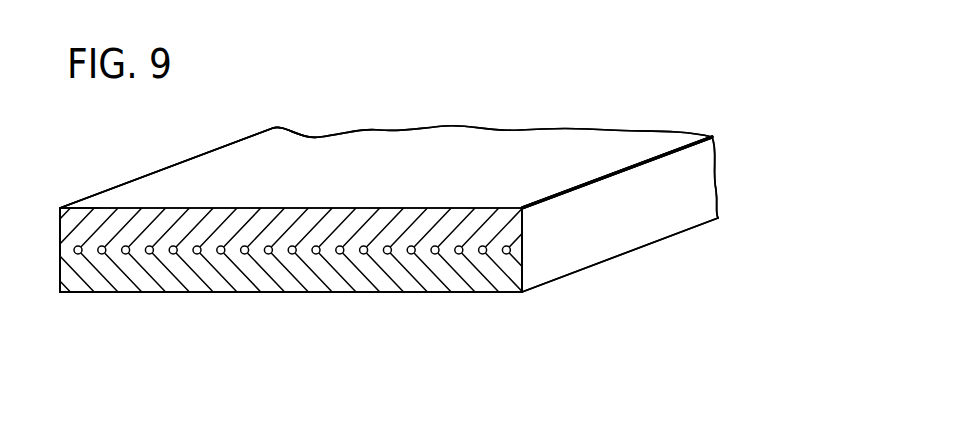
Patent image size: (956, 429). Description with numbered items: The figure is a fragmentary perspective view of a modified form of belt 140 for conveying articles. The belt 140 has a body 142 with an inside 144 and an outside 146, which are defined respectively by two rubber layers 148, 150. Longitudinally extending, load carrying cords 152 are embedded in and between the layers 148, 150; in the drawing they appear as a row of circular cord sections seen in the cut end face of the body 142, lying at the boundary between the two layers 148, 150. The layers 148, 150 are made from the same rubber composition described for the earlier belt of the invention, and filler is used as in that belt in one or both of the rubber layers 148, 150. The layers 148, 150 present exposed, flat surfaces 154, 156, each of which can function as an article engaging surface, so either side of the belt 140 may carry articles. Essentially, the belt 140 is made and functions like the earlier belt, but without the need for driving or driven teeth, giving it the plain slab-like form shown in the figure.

The belt 140 is at (560, 96).
The body 142 is at (682, 199).
The inside 144 is at (441, 300).
The outside 146 is at (432, 146).
The rubber layer 148 is at (57, 275).
The rubber layer 150 is at (59, 216).
The load carrying cords 152 is at (125, 254).
The flat surface 154 is at (367, 292).
The flat surface 156 is at (313, 157).